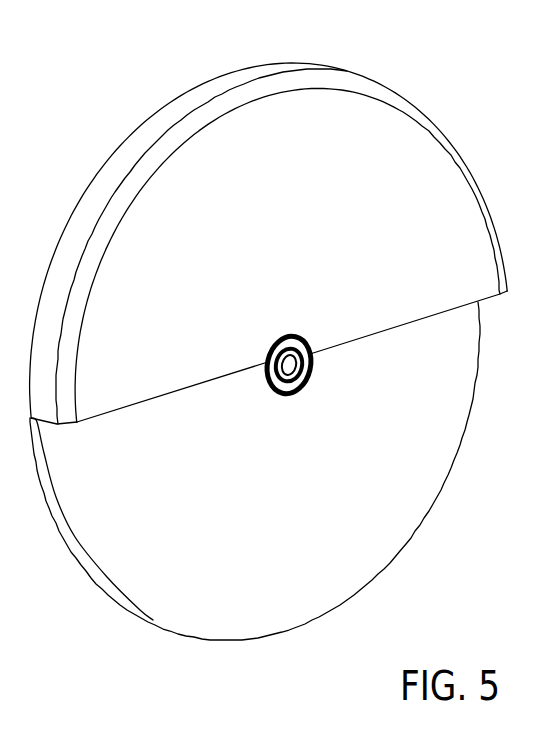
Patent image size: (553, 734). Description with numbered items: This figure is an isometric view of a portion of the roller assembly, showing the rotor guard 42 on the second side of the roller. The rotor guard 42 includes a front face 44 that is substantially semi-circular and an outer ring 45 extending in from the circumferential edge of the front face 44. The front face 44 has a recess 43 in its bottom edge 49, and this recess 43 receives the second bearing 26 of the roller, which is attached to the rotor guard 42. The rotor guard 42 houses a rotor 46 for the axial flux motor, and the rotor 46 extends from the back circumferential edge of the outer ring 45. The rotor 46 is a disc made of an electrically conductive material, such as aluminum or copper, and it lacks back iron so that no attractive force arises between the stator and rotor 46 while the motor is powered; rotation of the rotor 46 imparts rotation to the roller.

The second bearing 26 is at (243, 370).
The rotor guard 42 is at (283, 78).
The recess 43 is at (292, 333).
The front face 44 is at (240, 243).
The outer ring 45 is at (173, 113).
The rotor 46 is at (158, 618).
The bottom edge 49 is at (171, 394).